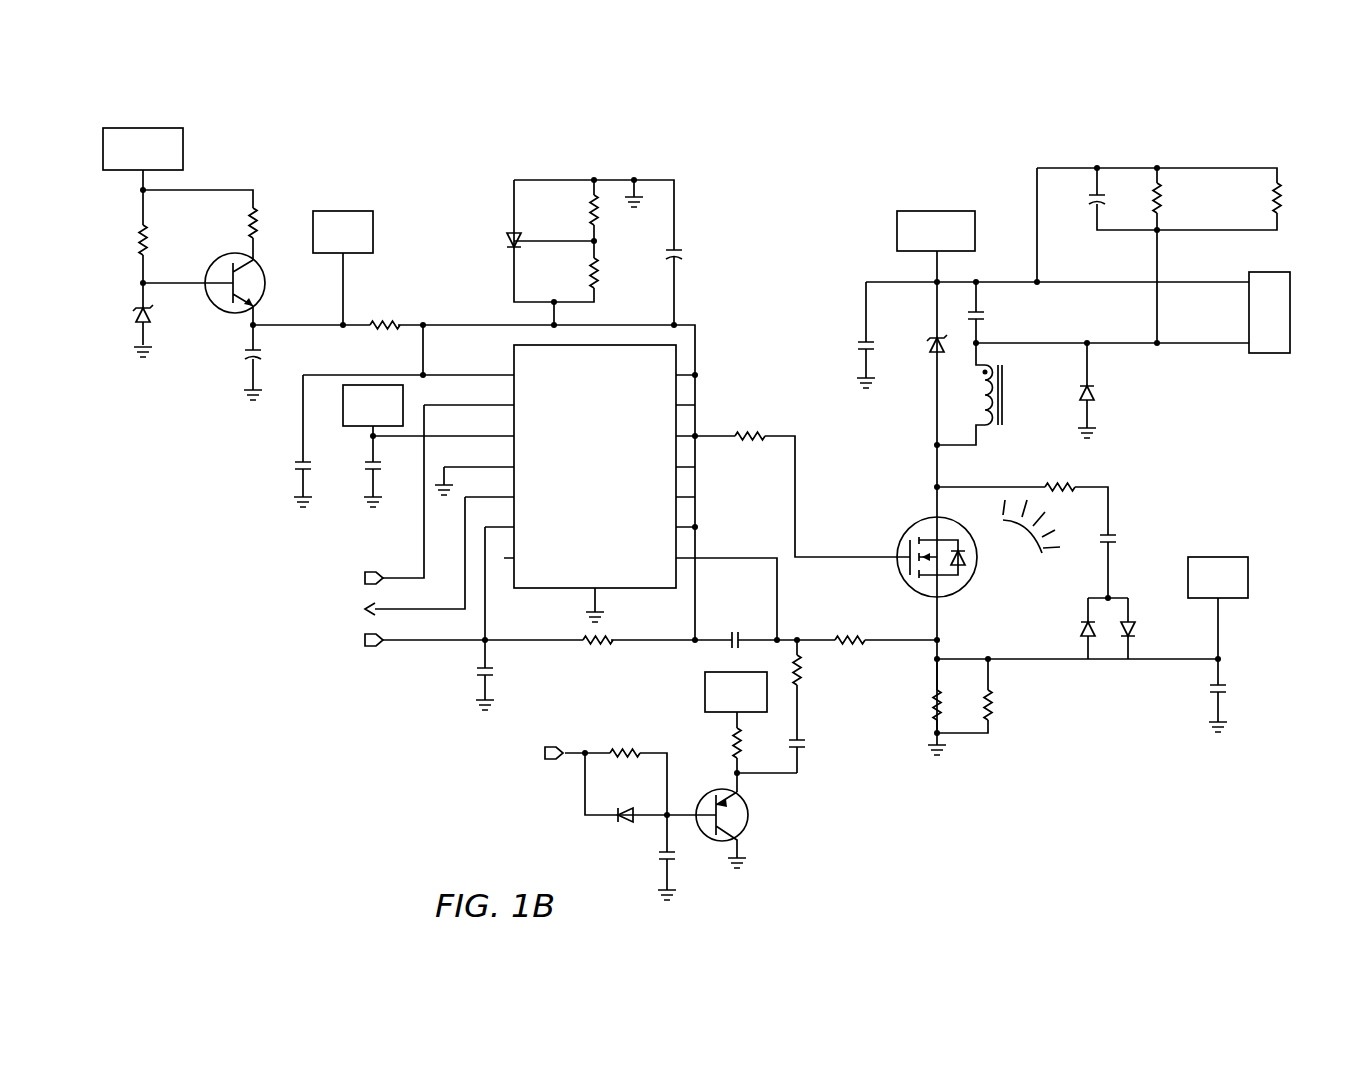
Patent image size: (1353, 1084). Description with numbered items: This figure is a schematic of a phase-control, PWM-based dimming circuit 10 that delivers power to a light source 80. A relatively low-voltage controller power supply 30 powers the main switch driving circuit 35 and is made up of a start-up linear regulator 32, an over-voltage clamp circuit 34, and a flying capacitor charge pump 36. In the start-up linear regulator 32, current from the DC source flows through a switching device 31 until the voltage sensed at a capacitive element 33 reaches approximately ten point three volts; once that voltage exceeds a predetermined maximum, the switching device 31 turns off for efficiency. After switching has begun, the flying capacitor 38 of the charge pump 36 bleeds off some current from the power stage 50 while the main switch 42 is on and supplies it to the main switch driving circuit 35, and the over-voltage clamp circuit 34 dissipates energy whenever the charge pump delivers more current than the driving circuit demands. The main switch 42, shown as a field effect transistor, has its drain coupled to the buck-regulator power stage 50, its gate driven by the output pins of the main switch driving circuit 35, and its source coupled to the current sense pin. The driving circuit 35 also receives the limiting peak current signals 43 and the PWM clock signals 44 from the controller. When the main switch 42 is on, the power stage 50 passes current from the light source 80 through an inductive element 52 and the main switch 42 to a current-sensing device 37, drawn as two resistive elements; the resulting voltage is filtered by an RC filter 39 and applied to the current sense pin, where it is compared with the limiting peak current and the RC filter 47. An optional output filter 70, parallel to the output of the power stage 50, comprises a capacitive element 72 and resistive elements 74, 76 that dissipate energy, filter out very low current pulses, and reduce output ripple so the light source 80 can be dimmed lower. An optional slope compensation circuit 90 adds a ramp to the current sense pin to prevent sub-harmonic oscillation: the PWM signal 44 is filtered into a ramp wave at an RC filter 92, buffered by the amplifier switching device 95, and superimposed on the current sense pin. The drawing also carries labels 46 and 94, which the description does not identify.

The dimming circuit 10 is at (1187, 869).
The controller power supply 30 is at (414, 267).
The switching device 31 is at (207, 277).
The start-up linear regulator 32 is at (274, 183).
The capacitive element 33 is at (267, 359).
The over-voltage clamp circuit 34 is at (716, 151).
The main switch driving circuit 35 is at (511, 364).
The flying capacitor charge pump 36 is at (1126, 695).
The current-sensing device 37 is at (968, 753).
The flying capacitor 38 is at (1118, 517).
The RC filter 39 is at (752, 541).
The main switch 42 is at (978, 572).
The limiting peak current signals 43 is at (370, 654).
The PWM clock signals 44 is at (372, 572).
The capacitor C25 46 is at (479, 690).
The RC filter 47 is at (412, 673).
The power stage 50 is at (905, 458).
The inductive element 52 is at (992, 430).
The output filter 70 is at (1279, 127).
The capacitive element 72 is at (1090, 210).
The resistive element 74 is at (1165, 206).
The resistive element 76 is at (1285, 206).
The light source 80 is at (1292, 313).
The slope compensation circuit 90 is at (768, 888).
The RC filter 92 is at (660, 730).
The RC network R14 and C36 94 is at (822, 703).
The switching device 95 is at (745, 828).